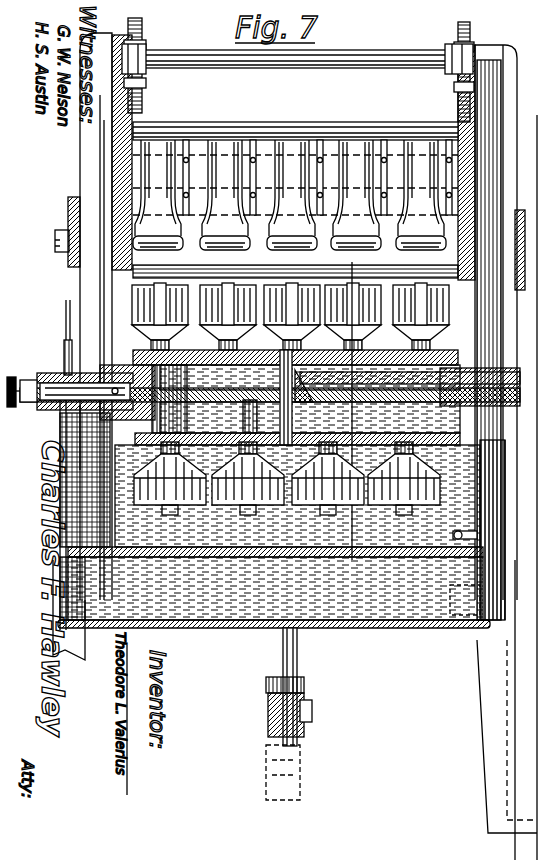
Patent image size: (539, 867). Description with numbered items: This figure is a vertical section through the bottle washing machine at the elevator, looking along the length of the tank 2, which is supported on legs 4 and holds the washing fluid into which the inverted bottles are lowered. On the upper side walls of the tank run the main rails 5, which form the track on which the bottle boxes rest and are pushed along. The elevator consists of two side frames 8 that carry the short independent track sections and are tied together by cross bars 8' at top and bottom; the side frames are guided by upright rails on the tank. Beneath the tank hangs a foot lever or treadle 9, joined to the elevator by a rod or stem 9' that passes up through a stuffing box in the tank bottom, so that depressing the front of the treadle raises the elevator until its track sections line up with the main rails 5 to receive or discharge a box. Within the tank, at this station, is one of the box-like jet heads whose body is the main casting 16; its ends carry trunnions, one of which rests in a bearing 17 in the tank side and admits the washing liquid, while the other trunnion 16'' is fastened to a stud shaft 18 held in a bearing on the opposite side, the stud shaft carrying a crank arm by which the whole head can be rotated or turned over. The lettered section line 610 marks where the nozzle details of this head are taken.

The side frame 8 is at (93, 316).
The cross bar 8' is at (297, 50).
The main casting 16 is at (270, 370).
The trunnion 16'' is at (51, 337).
The stud shaft 18 is at (62, 392).
The main rails 5 is at (62, 437).
The vertical rod 610 is at (352, 262).
The bearing 17 is at (490, 438).
The tank 2 is at (167, 628).
The rod or stem 9' is at (268, 687).
The foot lever or treadle 9 is at (295, 738).
The legs 4 is at (487, 708).